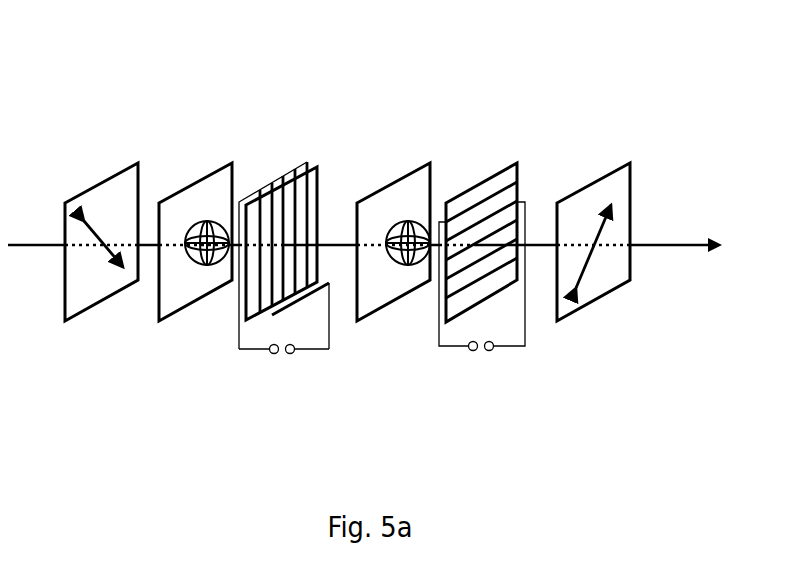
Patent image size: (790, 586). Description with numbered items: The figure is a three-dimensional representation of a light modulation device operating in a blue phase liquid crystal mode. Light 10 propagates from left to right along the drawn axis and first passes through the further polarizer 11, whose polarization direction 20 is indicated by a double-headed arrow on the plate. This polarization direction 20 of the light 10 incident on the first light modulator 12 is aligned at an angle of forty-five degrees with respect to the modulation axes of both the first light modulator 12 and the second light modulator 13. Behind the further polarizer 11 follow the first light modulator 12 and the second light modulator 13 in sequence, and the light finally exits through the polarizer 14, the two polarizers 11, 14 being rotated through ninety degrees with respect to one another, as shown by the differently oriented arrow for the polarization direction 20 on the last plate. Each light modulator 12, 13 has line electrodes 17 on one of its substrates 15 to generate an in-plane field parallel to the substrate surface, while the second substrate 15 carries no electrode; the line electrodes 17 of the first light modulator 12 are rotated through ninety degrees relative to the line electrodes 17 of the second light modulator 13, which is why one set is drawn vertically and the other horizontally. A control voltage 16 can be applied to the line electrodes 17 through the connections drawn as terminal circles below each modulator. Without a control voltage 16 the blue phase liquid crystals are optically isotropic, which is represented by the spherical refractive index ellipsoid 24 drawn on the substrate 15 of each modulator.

The light 10 is at (674, 245).
The further polarizer 11 is at (65, 203).
The first light modulator 12 is at (302, 153).
The second light modulator 13 is at (507, 153).
The polarizer 14 is at (564, 198).
The substrate 15 is at (159, 202).
The control voltage 16 is at (278, 356).
The line electrodes 17 is at (284, 260).
The polarization direction 20 is at (96, 226).
The spherical refractive index ellipsoid 24 is at (199, 220).